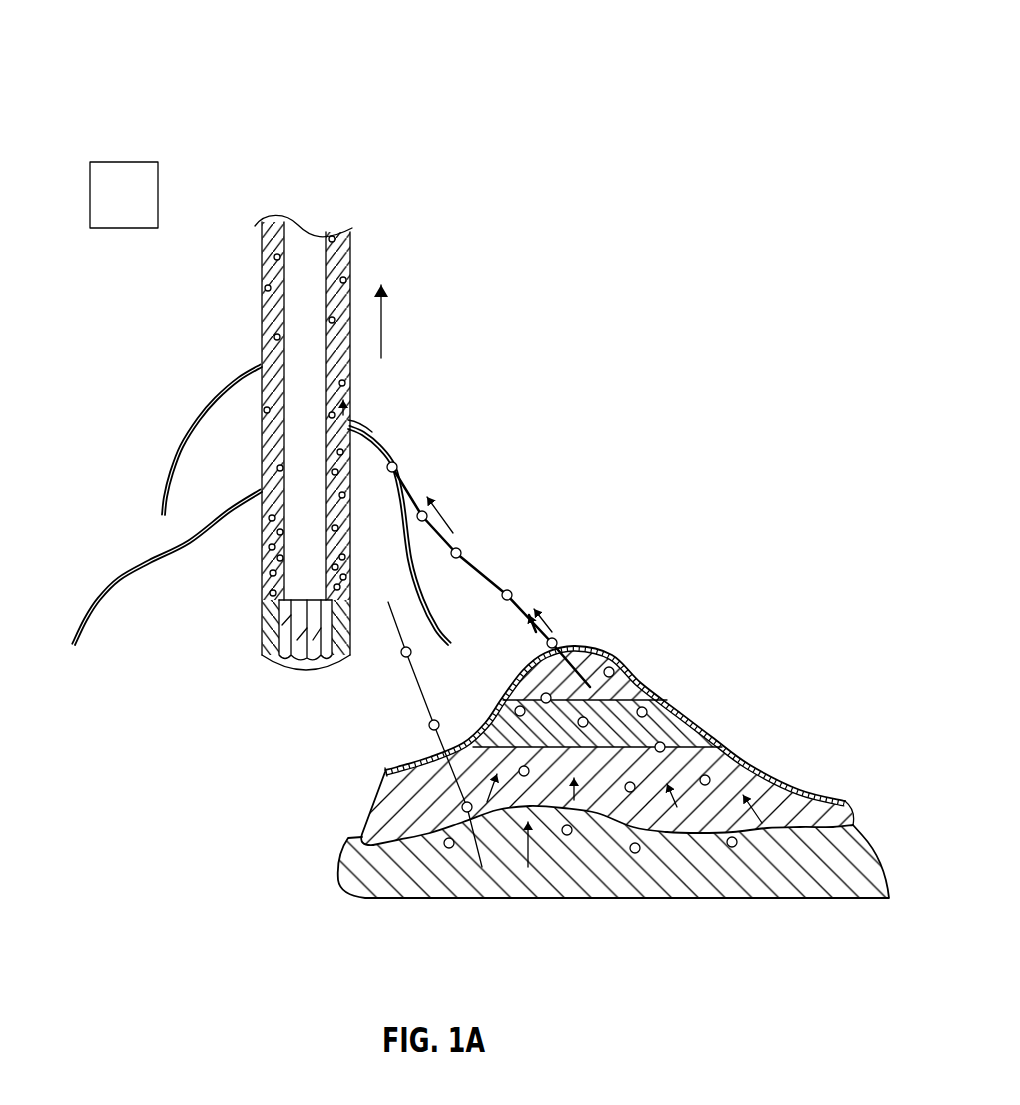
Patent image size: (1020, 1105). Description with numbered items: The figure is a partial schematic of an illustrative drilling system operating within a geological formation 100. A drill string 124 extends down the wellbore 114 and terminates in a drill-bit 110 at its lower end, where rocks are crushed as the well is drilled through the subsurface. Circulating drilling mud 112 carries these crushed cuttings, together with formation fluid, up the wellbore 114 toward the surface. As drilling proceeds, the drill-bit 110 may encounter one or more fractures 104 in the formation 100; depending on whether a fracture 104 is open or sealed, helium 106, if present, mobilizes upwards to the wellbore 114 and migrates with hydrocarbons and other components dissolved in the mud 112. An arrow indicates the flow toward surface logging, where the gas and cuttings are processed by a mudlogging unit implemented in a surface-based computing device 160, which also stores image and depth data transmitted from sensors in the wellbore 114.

The geological formation 100 is at (650, 50).
The fractures 104 is at (186, 442).
The helium 106 is at (400, 466).
The drill-bit 110 is at (298, 650).
The drilling mud 112 is at (270, 570).
The wellbore 114 is at (262, 294).
The drill string 124 is at (312, 285).
The surface-based computing device 160 is at (124, 162).